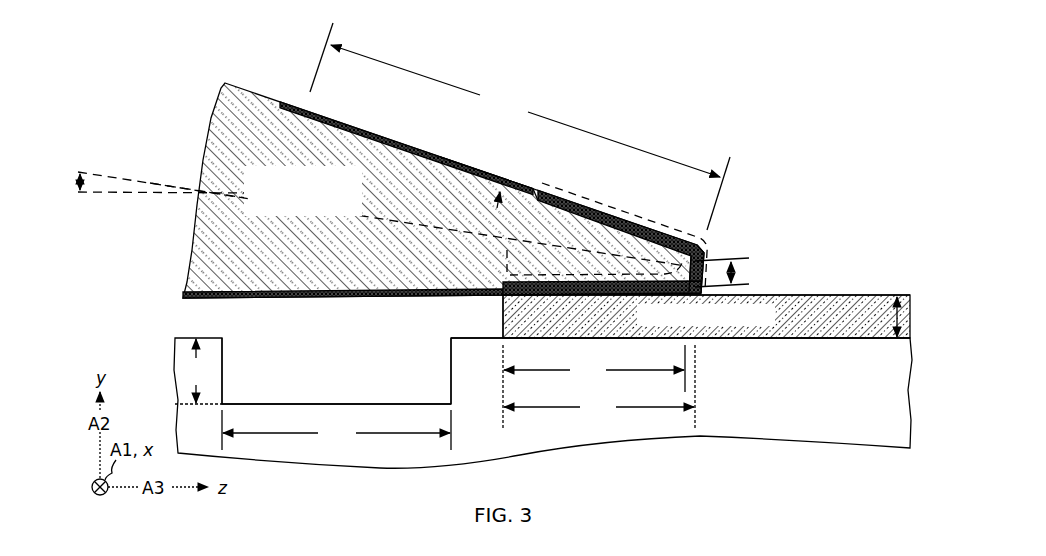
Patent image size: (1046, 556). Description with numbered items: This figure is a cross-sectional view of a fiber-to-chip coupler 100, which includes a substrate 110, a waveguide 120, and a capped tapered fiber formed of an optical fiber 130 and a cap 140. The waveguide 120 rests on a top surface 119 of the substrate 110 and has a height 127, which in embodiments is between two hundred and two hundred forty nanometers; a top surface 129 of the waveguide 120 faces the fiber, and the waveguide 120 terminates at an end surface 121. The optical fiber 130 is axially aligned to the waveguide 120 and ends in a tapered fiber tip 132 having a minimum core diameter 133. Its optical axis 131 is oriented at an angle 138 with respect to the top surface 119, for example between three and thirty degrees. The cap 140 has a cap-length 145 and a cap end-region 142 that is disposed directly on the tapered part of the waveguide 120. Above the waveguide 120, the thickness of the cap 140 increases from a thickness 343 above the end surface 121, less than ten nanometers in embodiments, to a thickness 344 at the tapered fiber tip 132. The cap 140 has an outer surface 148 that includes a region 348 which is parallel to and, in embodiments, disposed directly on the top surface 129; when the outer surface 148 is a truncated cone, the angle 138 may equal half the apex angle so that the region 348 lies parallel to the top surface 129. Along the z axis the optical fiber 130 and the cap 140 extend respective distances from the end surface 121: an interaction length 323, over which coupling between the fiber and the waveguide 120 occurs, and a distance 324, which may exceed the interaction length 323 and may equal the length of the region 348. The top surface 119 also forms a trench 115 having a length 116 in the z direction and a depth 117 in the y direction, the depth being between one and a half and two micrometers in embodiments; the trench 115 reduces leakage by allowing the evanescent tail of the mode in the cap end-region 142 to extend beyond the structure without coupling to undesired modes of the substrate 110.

The fiber-to-chip coupler 100 is at (780, 66).
The substrate 110 is at (543, 403).
The trench 115 is at (316, 334).
The length 116 is at (336, 430).
The depth 117 is at (198, 371).
The top surface 119 is at (807, 337).
The waveguide 120 is at (706, 316).
The end surface 121 is at (502, 317).
The height 127 is at (904, 318).
The top surface 129 is at (870, 294).
The optical fiber 130 is at (391, 190).
The optical axis 131 is at (172, 184).
The tapered fiber tip 132 is at (694, 270).
The minimum core diameter 133 is at (736, 268).
The angle 138 is at (76, 183).
The cap 140 is at (414, 146).
The cap end-region 142 is at (543, 184).
The cap-length 145 is at (520, 126).
The outer surface 148 is at (451, 154).
The interaction length 323 is at (594, 387).
The distance 324 is at (599, 387).
The thickness 343 is at (508, 172).
The thickness 344 is at (683, 237).
The region 348 is at (573, 299).